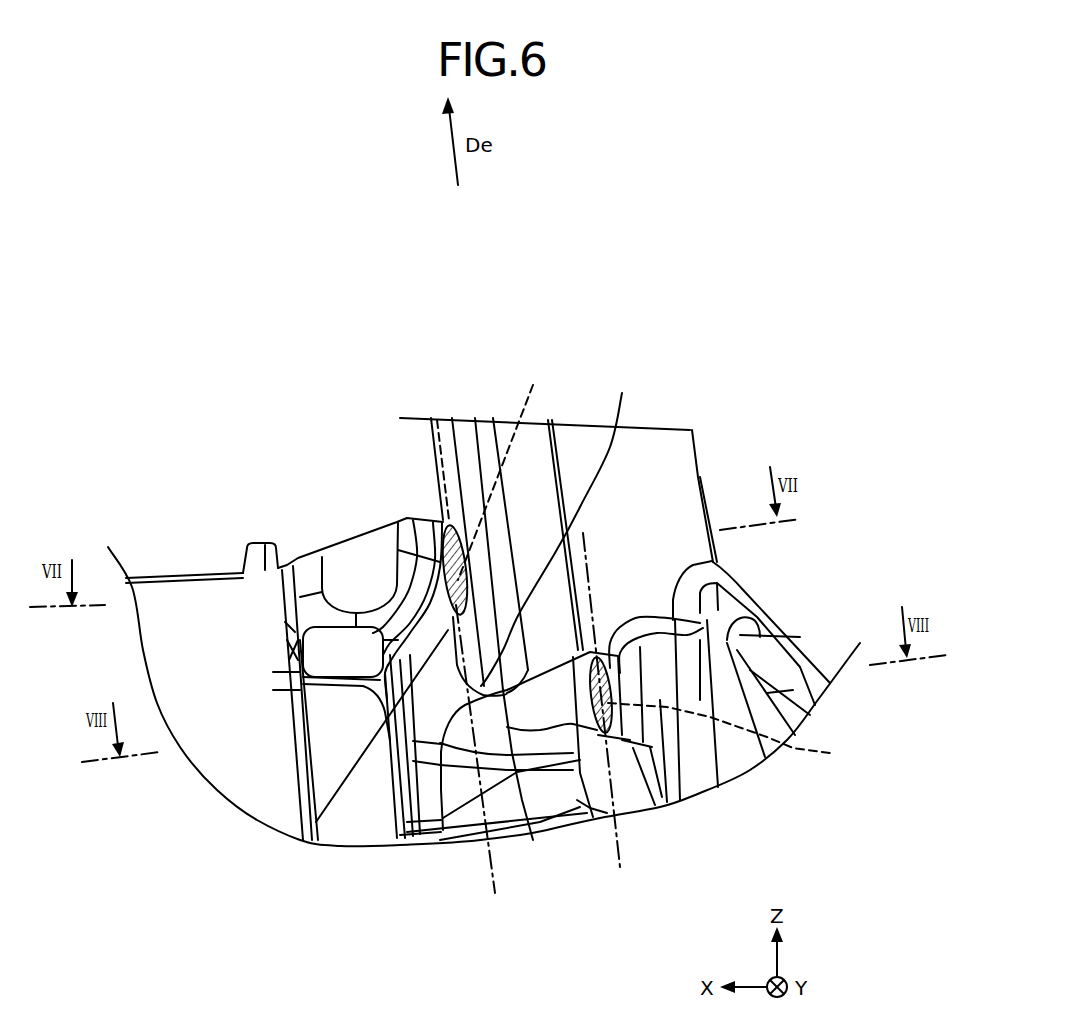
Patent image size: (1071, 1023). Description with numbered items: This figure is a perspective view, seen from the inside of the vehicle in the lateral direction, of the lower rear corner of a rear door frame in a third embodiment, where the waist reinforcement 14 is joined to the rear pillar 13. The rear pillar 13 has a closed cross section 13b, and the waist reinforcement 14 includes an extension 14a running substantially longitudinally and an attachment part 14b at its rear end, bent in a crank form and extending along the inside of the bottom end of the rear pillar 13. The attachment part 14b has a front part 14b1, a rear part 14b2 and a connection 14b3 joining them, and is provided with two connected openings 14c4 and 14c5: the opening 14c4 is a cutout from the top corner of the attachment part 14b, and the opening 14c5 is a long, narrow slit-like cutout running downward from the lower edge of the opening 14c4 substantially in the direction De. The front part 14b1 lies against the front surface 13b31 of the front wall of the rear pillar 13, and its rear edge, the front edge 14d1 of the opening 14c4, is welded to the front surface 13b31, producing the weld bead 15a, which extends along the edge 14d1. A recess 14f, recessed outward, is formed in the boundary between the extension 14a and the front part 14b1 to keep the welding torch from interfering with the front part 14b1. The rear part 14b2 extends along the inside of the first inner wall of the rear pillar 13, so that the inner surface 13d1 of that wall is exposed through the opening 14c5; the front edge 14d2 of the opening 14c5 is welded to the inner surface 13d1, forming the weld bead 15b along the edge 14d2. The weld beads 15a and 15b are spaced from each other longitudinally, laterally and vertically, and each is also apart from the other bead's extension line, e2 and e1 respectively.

The rear pillar 13 is at (431, 412).
The closed cross section 13b is at (478, 412).
The front surface 13b31 is at (452, 467).
The inner surface 13d1 is at (645, 480).
The waist reinforcement 14 is at (165, 570).
The extension 14a is at (183, 643).
The attachment part 14b is at (421, 849).
The front part 14b1 is at (307, 838).
The rear part 14b2 is at (670, 722).
The connection 14b3 is at (543, 717).
The opening 14c4 is at (563, 527).
The opening 14c5 is at (633, 628).
The front edge 14d1 is at (508, 470).
The front edge 14d2 is at (747, 735).
The recess 14f is at (360, 583).
The weld bead 15a is at (445, 615).
The weld bead 15b is at (673, 803).
The extension line e1 is at (488, 853).
The extension line e2 is at (617, 820).